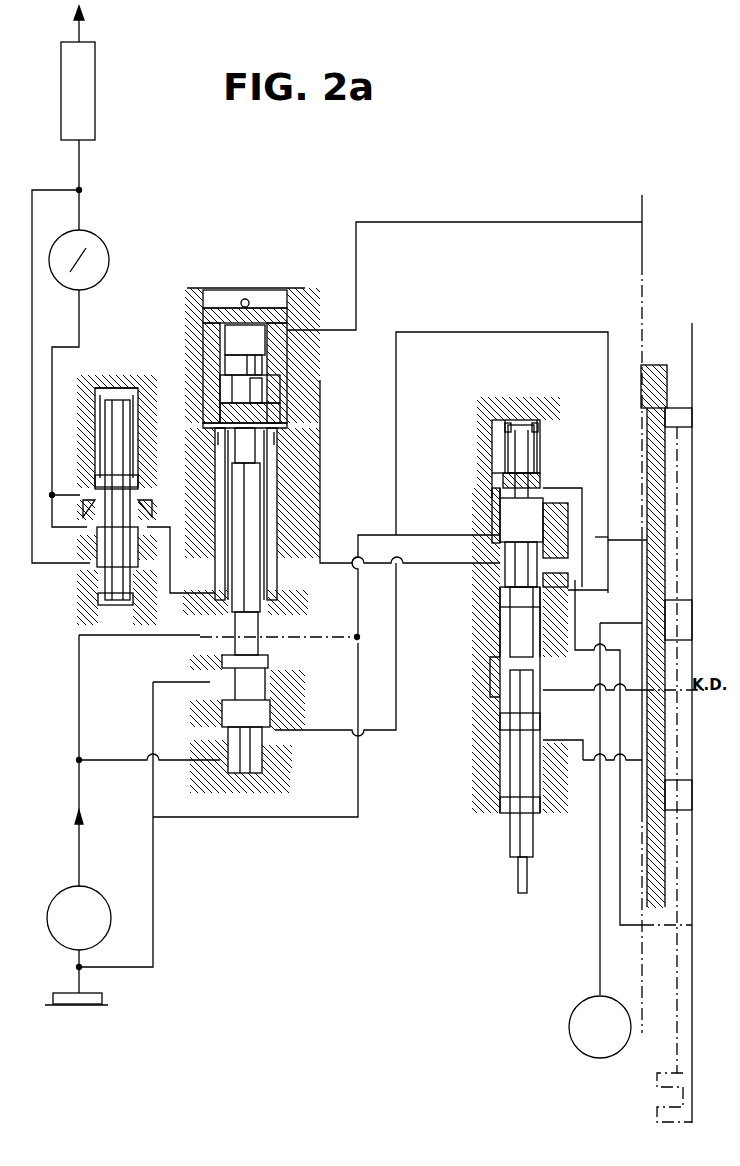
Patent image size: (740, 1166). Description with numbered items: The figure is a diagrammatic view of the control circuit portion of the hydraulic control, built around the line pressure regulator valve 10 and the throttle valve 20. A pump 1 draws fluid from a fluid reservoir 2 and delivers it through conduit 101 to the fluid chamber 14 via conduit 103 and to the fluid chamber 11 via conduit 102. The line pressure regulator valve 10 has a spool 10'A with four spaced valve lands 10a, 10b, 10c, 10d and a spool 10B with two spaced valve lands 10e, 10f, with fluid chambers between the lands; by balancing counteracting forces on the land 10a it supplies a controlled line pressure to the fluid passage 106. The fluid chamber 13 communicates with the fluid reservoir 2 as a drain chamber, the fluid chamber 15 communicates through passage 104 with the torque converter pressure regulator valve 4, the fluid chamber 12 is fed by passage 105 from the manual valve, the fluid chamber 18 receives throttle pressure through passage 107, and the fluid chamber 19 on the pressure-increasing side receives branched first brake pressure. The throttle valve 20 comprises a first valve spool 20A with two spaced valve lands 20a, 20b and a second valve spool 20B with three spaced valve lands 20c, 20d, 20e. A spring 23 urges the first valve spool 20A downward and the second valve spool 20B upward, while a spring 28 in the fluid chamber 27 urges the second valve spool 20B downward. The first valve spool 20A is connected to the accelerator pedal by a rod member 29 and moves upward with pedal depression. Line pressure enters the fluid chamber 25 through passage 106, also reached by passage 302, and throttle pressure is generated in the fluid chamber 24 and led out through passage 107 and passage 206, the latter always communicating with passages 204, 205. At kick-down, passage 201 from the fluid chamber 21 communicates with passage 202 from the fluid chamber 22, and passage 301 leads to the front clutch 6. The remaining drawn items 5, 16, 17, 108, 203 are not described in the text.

The pump 1 is at (112, 918).
The fluid reservoir 2 is at (86, 1006).
The torque converter pressure regulator valve 4 is at (124, 365).
The temperature controller 5 is at (110, 260).
The front clutch 6 is at (570, 1032).
The line pressure regulator valve 10 is at (252, 400).
The valve land 10a is at (280, 770).
The valve land 10b is at (272, 713).
The valve land 10c is at (270, 665).
The valve land 10d is at (262, 578).
The valve land 10e is at (272, 415).
The valve land 10f is at (265, 362).
The spool 10B is at (268, 390).
The spool 10'A is at (295, 520).
The fluid chamber 11 is at (218, 775).
The fluid chamber 12 is at (210, 728).
The fluid chamber 13 is at (212, 678).
The fluid chamber 14 is at (215, 628).
The fluid chamber 15 is at (285, 598).
The inner sleeve 16 is at (268, 502).
The cylinder tube 17 is at (274, 470).
The fluid chamber 18 is at (228, 388).
The fluid chamber 19 is at (228, 347).
The throttle valve 20 is at (495, 398).
The valve land 20a is at (506, 812).
The valve land 20b is at (496, 720).
The valve land 20c is at (495, 628).
The valve land 20d is at (492, 517).
The valve land 20e is at (545, 480).
The first valve spool 20A is at (512, 780).
The second valve spool 20B is at (498, 598).
The fluid chamber 21 is at (545, 810).
The fluid chamber 22 is at (545, 705).
The spring 23 is at (490, 657).
The fluid chamber 24 is at (521, 520).
The fluid chamber 25 is at (490, 543).
The fluid chamber 27 is at (548, 443).
The spring 28 is at (545, 426).
The rod member 29 is at (530, 888).
The conduit 101 is at (80, 798).
The conduit 102 is at (104, 760).
The conduit 103 is at (80, 712).
The passage 104 is at (172, 545).
The passage 105 is at (396, 715).
The fluid passage 106 is at (306, 637).
The passage 107 is at (322, 482).
The pipe 108 is at (336, 331).
The passage 201 is at (582, 762).
The passage 202 is at (578, 690).
The block 203 is at (516, 622).
The passage 204 is at (568, 578).
The passage 205 is at (578, 512).
The passage 206 is at (576, 628).
The passage 301 is at (621, 636).
The passage 302 is at (627, 556).